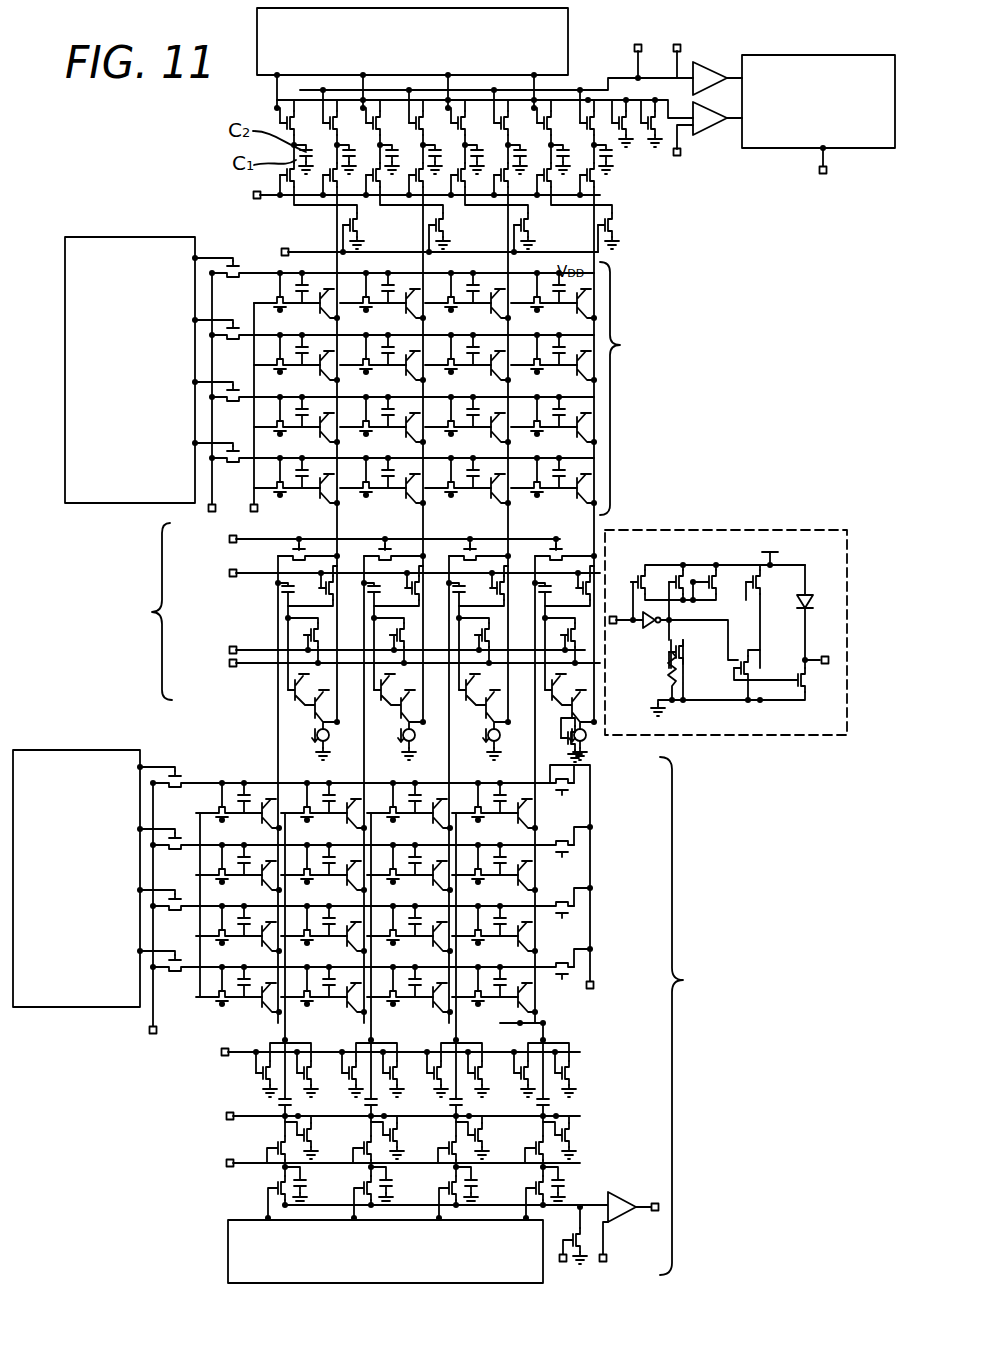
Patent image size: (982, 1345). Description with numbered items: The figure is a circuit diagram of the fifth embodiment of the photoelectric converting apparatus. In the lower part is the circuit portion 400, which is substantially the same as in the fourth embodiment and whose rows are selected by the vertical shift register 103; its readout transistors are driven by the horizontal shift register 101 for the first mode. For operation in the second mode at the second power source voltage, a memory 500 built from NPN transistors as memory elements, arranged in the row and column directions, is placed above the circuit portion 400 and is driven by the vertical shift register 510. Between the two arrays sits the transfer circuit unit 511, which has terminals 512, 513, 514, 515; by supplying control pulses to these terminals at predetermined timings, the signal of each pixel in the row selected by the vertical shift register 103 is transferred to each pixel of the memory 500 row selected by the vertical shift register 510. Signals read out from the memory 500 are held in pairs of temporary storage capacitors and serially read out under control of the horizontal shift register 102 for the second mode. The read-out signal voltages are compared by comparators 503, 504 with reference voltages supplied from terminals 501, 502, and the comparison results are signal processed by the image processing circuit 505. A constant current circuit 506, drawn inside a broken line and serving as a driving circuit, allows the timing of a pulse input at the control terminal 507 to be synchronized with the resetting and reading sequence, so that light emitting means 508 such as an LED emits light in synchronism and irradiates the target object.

The horizontal shift register 101 is at (226, 1227).
The horizontal shift register 102 is at (568, 20).
The vertical shift register 103 is at (108, 750).
The circuit portion 400 is at (435, 996).
The memory 500 is at (429, 385).
The terminal 501 is at (677, 45).
The terminal 502 is at (677, 156).
The comparator 503 is at (711, 68).
The comparator 504 is at (705, 136).
The image processing circuit 505 is at (773, 150).
The constant current circuit 506 is at (726, 607).
The control terminal 507 is at (614, 626).
The light emitting means 508 is at (807, 594).
The vertical shift register 510 is at (167, 236).
The transfer circuit unit 511 is at (359, 653).
The terminal 512 is at (229, 540).
The terminal 513 is at (229, 574).
The terminal 514 is at (229, 650).
The terminal 515 is at (229, 664).